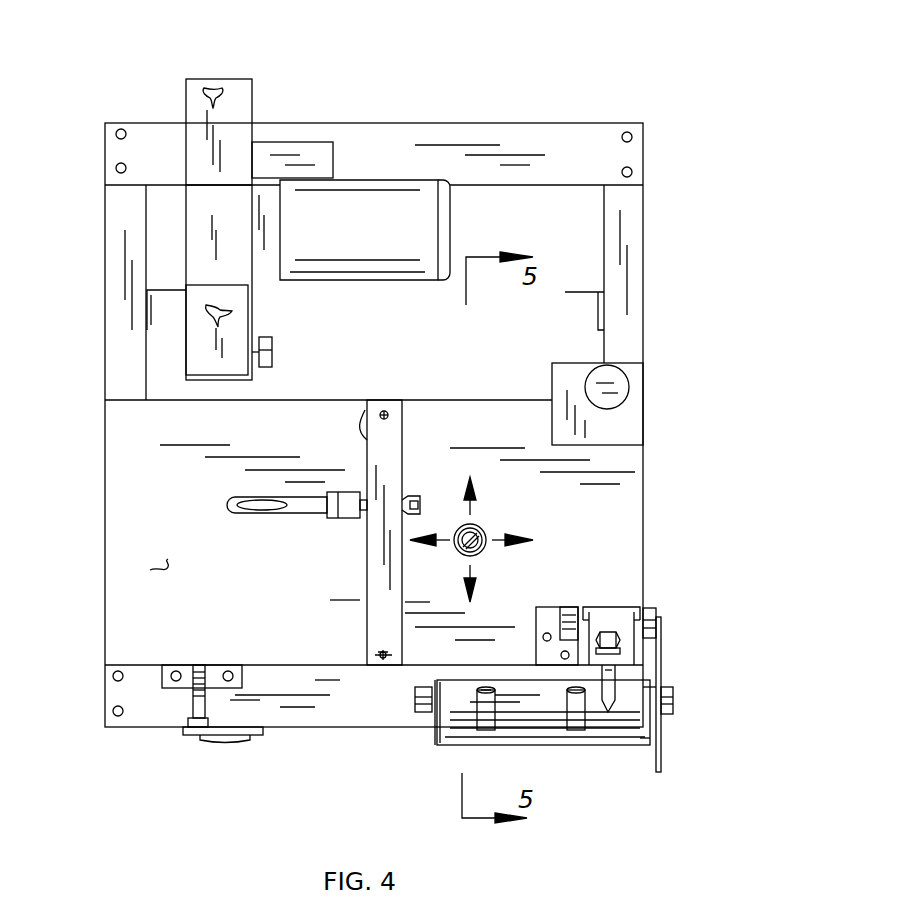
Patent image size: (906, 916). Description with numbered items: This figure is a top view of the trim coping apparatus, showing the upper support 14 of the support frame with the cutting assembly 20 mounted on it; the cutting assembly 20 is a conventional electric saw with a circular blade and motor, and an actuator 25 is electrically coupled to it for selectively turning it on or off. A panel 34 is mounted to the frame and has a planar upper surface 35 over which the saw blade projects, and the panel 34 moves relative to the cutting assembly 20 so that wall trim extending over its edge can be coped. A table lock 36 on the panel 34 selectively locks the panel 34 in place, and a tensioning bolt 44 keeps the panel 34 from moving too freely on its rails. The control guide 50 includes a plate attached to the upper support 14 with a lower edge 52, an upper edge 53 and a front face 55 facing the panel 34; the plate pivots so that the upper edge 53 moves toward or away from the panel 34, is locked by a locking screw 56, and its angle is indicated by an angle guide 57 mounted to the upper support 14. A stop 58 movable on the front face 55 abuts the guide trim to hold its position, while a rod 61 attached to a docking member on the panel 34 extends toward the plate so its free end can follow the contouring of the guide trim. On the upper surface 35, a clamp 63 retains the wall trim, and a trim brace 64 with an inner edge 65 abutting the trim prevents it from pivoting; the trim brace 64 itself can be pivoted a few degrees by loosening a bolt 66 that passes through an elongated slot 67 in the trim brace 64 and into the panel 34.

The upper support 14 is at (283, 730).
The cutting assembly 20 is at (252, 79).
The actuator 25 is at (225, 743).
The panel 34 is at (105, 633).
The upper surface 35 is at (160, 565).
The table lock 36 is at (622, 388).
The tensioning bolt 44 is at (193, 703).
The control guide 50 is at (668, 585).
The lower edge 52 is at (418, 683).
The upper edge 53 is at (580, 743).
The front face 55 is at (641, 735).
The locking screw 56 is at (668, 710).
The angle guide 57 is at (661, 765).
The stop 58 is at (480, 705).
The rod 61 is at (620, 693).
The clamp 63 is at (227, 503).
The trim brace 64 is at (392, 442).
The inner edge 65 is at (355, 443).
The bolt 66 is at (383, 655).
The elongated slot 67 is at (392, 663).